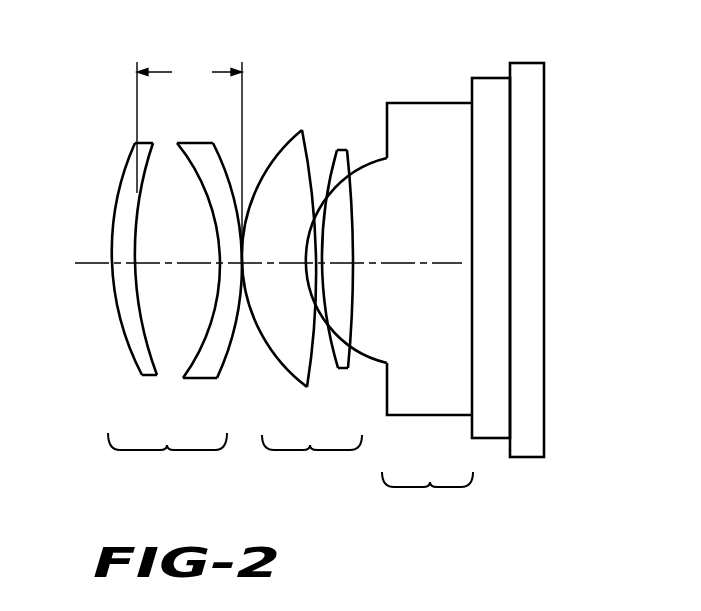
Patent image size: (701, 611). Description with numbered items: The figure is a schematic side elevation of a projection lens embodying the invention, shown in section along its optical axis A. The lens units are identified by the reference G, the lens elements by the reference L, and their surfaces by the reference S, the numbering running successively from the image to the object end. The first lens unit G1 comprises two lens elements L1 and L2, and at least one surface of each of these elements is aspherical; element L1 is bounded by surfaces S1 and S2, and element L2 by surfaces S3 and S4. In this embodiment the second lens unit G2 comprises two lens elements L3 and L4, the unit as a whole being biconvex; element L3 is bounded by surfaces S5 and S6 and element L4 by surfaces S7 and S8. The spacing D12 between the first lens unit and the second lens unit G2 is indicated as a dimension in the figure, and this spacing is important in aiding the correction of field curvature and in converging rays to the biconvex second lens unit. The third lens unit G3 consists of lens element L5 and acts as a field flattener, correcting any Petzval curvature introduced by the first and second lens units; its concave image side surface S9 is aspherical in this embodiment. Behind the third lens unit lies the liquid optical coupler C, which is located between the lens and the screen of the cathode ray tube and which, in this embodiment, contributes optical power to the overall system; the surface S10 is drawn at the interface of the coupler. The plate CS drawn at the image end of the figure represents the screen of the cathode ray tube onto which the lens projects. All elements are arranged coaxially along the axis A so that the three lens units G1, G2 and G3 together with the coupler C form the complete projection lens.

The first lens element L1 is at (128, 240).
The second lens element L2 is at (205, 260).
The third lens element L3 is at (280, 248).
The fourth lens element L4 is at (363, 247).
The fifth lens element L5 is at (389, 228).
The liquid optical coupler C is at (546, 230).
The cover glass / image sensor plate CS is at (545, 63).
The first lens surface S1 is at (121, 328).
The second lens surface S2 is at (136, 342).
The third lens surface S3 is at (216, 301).
The fourth lens surface S4 is at (229, 352).
The fifth lens surface S5 is at (264, 342).
The sixth lens surface S6 is at (313, 373).
The seventh lens surface S7 is at (327, 348).
The eighth lens surface S8 is at (353, 323).
The ninth lens surface S9 is at (458, 300).
The tenth surface S10 is at (472, 207).
The optical axis A is at (96, 263).
The spacing between first element and second lens unit D12 is at (189, 161).
The first lens unit G1 is at (167, 464).
The second lens unit G2 is at (312, 465).
The third lens unit G3 is at (427, 501).